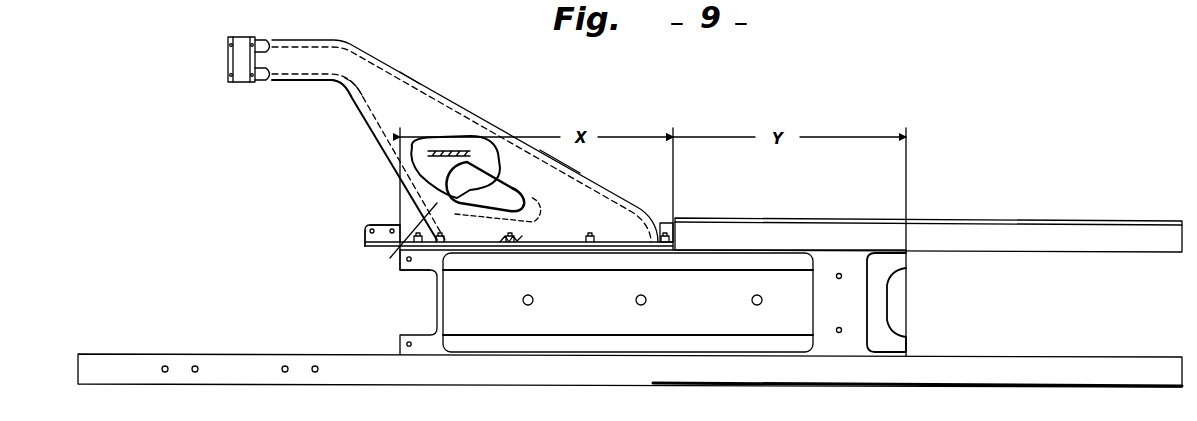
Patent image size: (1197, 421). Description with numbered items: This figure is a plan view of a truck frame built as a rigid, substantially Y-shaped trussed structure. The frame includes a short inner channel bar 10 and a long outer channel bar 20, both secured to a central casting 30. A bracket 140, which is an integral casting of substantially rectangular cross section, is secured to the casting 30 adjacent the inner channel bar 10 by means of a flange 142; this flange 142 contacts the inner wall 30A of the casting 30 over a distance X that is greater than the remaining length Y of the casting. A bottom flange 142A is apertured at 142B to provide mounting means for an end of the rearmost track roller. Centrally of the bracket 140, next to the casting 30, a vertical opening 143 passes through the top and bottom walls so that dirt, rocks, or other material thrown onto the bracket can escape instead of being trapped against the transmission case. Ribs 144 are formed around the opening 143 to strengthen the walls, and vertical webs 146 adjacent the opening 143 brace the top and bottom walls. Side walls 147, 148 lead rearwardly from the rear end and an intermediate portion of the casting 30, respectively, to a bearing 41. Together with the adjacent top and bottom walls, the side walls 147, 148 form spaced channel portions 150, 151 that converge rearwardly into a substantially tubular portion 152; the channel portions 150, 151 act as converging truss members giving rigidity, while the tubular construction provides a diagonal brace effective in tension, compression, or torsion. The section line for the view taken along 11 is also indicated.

The short inner channel bar 10 is at (1013, 228).
The section line 11 is at (610, 160).
The long outer channel bar 20 is at (1082, 338).
The central casting 30 is at (724, 310).
The inner wall 30A is at (400, 258).
The bearing 41 is at (243, 77).
The bracket 140 is at (352, 34).
The flange 142 is at (365, 246).
The bottom flange 142A is at (365, 238).
The aperture 142B is at (390, 224).
The vertical opening 143 is at (513, 202).
The ribs 144 is at (490, 162).
The vertical webs 146 is at (452, 153).
The side wall 147 is at (360, 128).
The side wall 148 is at (410, 81).
The channel portion 150 is at (402, 245).
The channel portion 151 is at (550, 178).
The tubular portion 152 is at (360, 87).